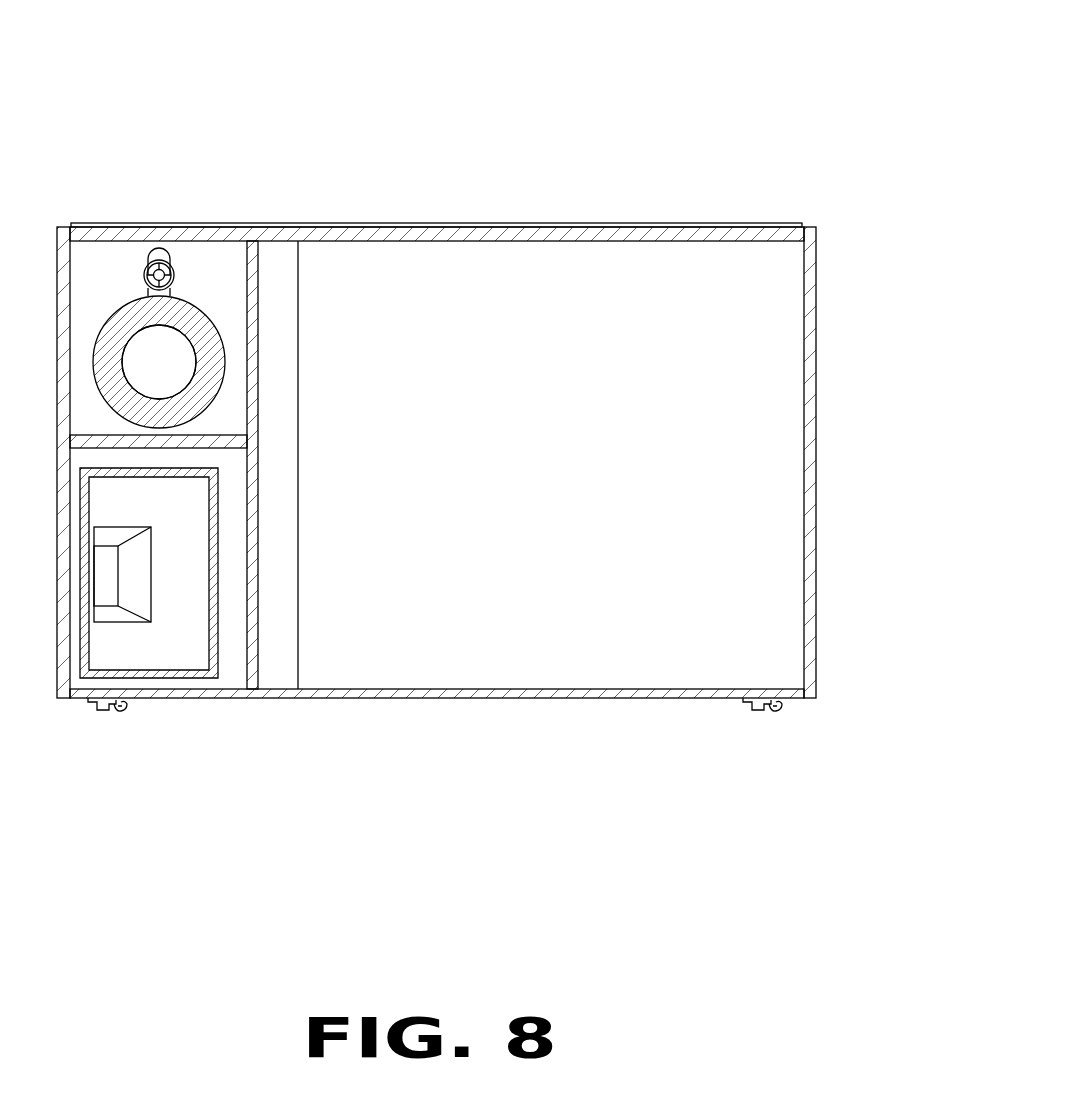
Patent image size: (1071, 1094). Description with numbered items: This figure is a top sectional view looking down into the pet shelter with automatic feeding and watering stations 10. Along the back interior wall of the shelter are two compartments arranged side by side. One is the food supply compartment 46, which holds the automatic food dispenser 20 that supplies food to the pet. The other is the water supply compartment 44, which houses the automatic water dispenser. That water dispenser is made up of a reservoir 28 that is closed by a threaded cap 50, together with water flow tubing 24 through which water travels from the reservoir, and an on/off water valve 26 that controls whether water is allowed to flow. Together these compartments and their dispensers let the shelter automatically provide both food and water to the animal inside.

The pet shelter with automatic feeding and watering stations 10 is at (648, 92).
The automatic food dispenser 20 is at (173, 573).
The water flow tubing 24 is at (158, 250).
The on/off water valve 26 is at (173, 268).
The reservoir 28 is at (215, 370).
The water supply compartment 44 is at (238, 352).
The food supply compartment 46 is at (233, 645).
The threaded cap 50 is at (170, 348).